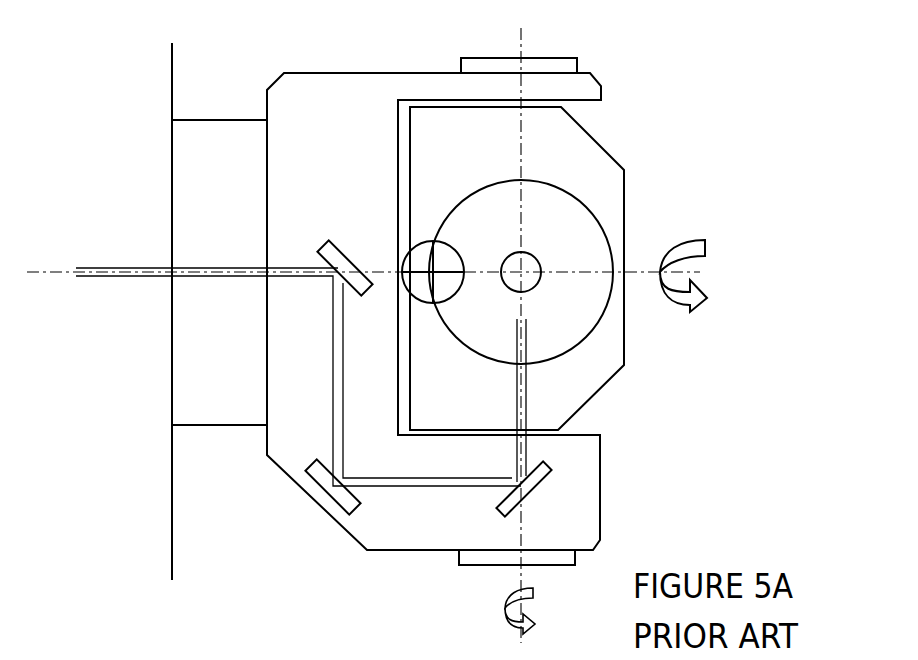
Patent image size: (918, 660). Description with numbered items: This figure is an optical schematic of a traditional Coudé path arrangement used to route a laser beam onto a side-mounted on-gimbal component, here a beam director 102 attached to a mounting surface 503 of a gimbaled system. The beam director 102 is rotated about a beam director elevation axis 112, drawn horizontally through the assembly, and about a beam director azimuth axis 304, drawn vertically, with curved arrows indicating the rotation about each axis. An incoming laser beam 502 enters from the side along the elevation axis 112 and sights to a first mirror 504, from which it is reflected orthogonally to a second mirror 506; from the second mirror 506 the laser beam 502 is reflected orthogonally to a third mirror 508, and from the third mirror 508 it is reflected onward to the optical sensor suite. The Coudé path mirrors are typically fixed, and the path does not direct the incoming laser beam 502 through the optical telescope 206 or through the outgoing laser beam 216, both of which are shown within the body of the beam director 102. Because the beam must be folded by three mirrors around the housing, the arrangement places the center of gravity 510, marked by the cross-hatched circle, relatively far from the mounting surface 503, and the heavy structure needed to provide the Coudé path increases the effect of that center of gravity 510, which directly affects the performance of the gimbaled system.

The beam director 102 is at (614, 90).
The beam director elevation axis 112 is at (40, 270).
The optical telescope 206 is at (563, 174).
The outgoing laser beam 216 is at (562, 318).
The beam director azimuth axis 304 is at (522, 43).
The incoming laser beam 502 is at (218, 264).
The mounting surface 503 is at (172, 490).
The first mirror 504 is at (348, 246).
The second mirror 506 is at (323, 494).
The third mirror 508 is at (528, 492).
The center of gravity 510 is at (463, 262).